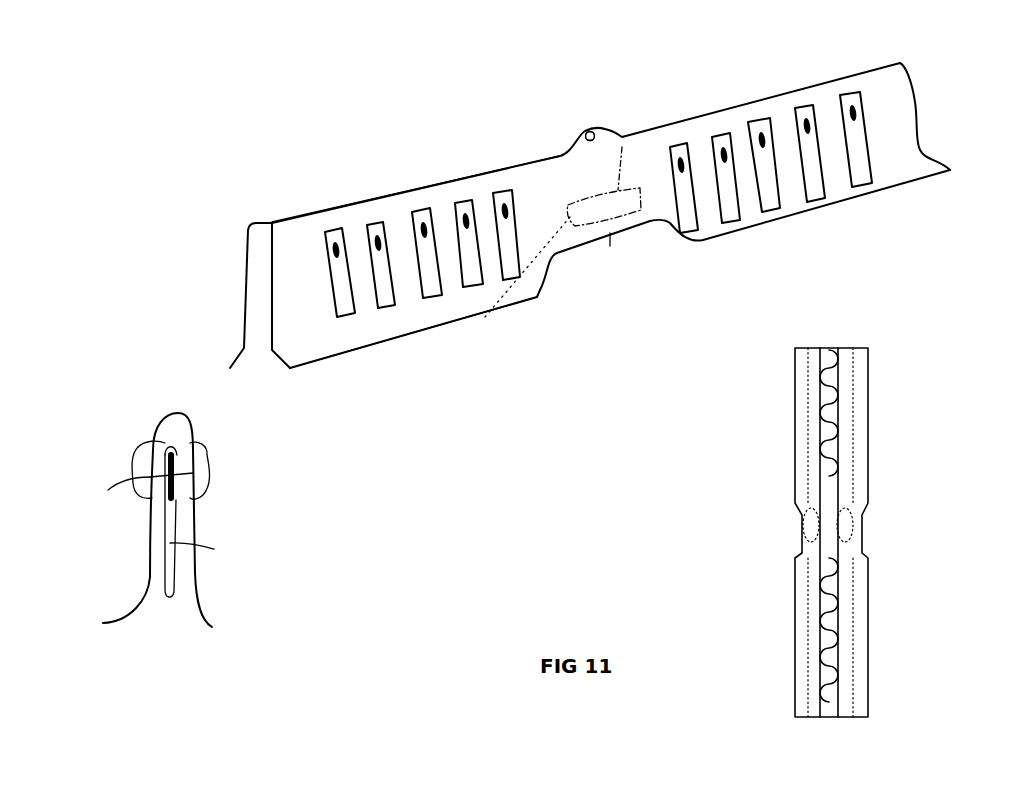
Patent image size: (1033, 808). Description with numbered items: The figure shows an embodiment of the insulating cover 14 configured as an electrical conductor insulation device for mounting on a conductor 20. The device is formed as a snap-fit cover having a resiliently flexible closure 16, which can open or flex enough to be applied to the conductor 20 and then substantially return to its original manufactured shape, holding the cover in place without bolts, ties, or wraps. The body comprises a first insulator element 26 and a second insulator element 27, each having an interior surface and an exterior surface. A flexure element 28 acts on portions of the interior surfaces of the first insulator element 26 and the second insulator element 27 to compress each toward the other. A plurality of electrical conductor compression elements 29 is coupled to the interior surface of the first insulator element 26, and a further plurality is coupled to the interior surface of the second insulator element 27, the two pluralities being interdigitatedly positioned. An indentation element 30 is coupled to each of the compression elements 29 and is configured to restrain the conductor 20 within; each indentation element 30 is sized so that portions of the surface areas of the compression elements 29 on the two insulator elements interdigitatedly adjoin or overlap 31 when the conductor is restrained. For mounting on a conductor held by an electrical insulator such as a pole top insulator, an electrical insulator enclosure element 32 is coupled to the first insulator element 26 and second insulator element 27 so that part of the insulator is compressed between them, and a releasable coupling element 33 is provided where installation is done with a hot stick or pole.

The insulating cover 14 is at (298, 234).
The resiliently flexible closure 16 is at (262, 360).
The conductor 20 is at (201, 471).
The first insulator element 26 is at (243, 306).
The second insulator element 27 is at (330, 338).
The flexure element 28 is at (418, 188).
The electrical conductor compression elements 29 is at (512, 265).
The indentation element 30 is at (99, 496).
The overlap 31 is at (222, 548).
The electrical insulator enclosure element 32 is at (607, 210).
The releasable coupling element 33 is at (593, 132).